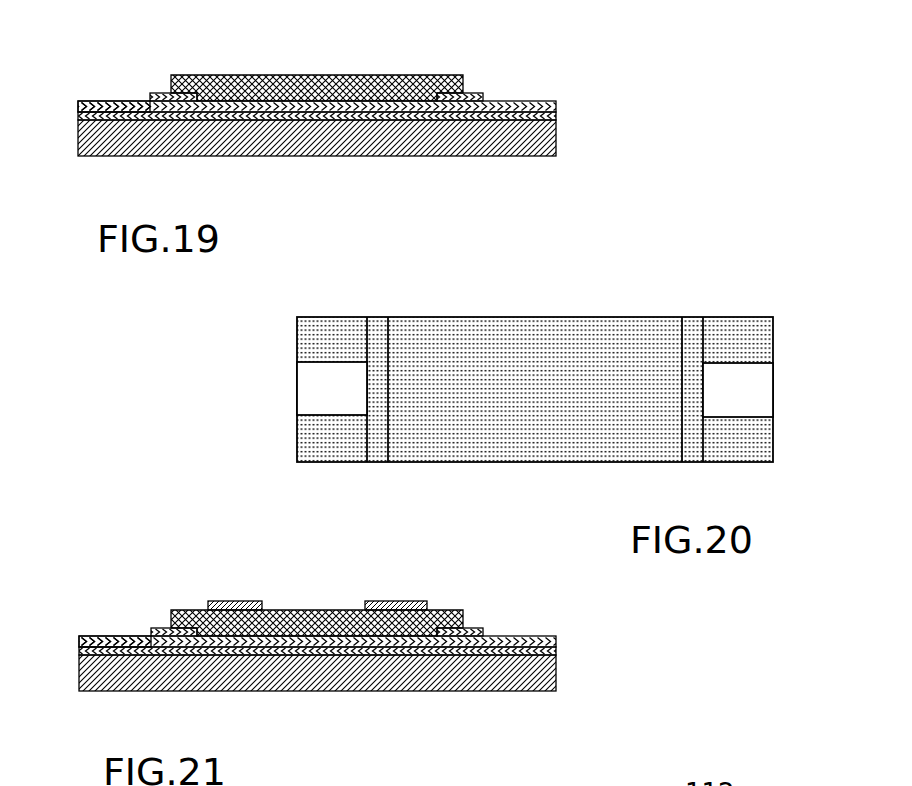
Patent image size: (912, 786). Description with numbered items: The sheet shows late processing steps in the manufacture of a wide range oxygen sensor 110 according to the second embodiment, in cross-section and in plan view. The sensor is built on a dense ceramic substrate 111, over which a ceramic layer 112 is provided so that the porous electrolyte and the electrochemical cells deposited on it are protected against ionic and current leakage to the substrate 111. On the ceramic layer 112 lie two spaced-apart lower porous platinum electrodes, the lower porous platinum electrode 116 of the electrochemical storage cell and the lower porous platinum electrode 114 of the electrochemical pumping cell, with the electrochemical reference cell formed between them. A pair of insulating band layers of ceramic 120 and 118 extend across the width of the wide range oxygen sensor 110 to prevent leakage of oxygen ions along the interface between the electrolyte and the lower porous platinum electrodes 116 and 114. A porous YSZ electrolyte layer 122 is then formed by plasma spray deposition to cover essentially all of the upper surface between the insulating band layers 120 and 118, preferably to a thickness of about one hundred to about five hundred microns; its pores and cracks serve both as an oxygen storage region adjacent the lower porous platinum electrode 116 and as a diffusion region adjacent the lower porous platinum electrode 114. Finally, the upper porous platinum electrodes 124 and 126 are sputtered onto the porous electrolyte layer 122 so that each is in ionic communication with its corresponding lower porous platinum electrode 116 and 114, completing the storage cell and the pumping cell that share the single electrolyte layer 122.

In FIG. 21, the wide range oxygen sensor 110 is at (575, 674).
In FIG. 19, the dense ceramic substrate 111 is at (556, 143).
In FIG. 21, the dense ceramic substrate 111 is at (556, 690).
In FIG. 19, the ceramic layer 112 is at (556, 117).
In FIG. 20, the ceramic layer 112 is at (737, 330).
In FIG. 21, the ceramic layer 112 is at (556, 651).
In FIG. 19, the lower porous platinum electrode 114 is at (556, 103).
In FIG. 20, the lower porous platinum electrode 114 is at (753, 403).
In FIG. 21, the lower porous platinum electrode 114 is at (556, 636).
In FIG. 19, the lower porous platinum electrode 116 is at (80, 101).
In FIG. 20, the lower porous platinum electrode 116 is at (316, 393).
In FIG. 21, the lower porous platinum electrode 116 is at (100, 636).
In FIG. 19, the insulating band layer of ceramic 118 is at (471, 96).
In FIG. 20, the insulating band layer of ceramic 118 is at (693, 327).
In FIG. 21, the insulating band layer of ceramic 118 is at (481, 628).
In FIG. 19, the insulating band layer of ceramic 120 is at (151, 93).
In FIG. 20, the insulating band layer of ceramic 120 is at (377, 328).
In FIG. 21, the insulating band layer of ceramic 120 is at (162, 628).
In FIG. 19, the porous YSZ electrolyte layer 122 is at (372, 75).
In FIG. 20, the porous YSZ electrolyte layer 122 is at (514, 338).
In FIG. 21, the porous YSZ electrolyte layer 122 is at (457, 610).
In FIG. 21, the upper porous platinum electrode 124 is at (232, 601).
In FIG. 21, the upper porous platinum electrode 126 is at (400, 601).